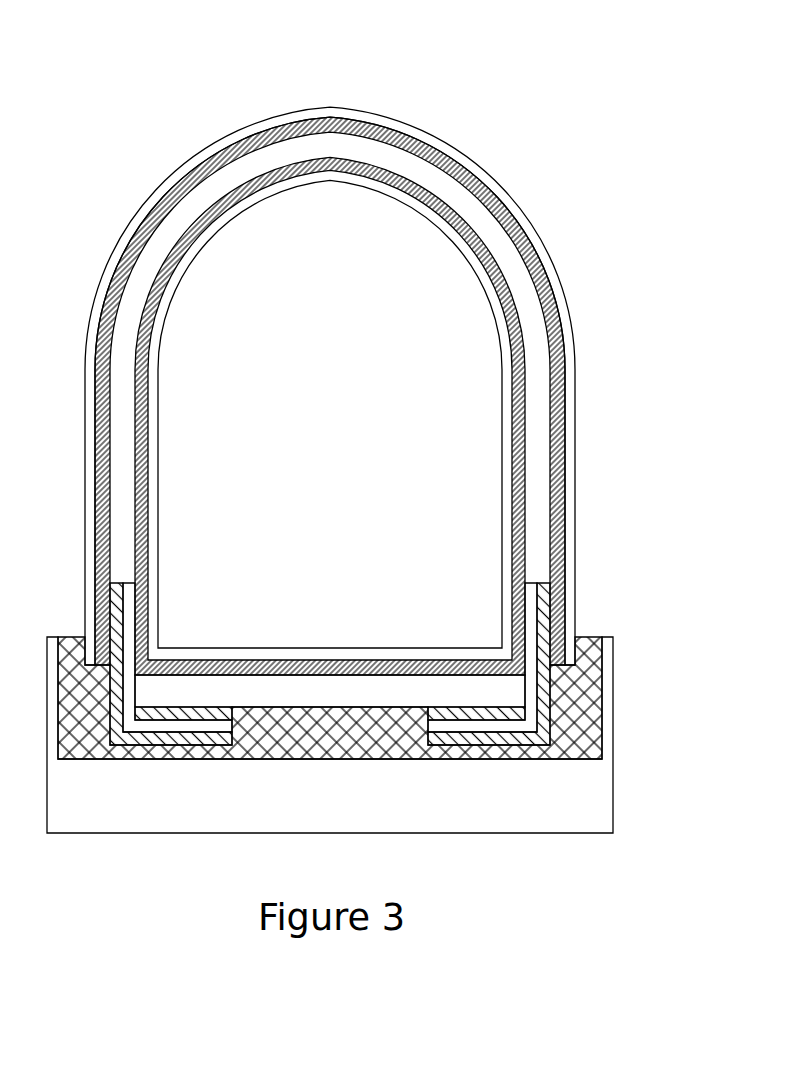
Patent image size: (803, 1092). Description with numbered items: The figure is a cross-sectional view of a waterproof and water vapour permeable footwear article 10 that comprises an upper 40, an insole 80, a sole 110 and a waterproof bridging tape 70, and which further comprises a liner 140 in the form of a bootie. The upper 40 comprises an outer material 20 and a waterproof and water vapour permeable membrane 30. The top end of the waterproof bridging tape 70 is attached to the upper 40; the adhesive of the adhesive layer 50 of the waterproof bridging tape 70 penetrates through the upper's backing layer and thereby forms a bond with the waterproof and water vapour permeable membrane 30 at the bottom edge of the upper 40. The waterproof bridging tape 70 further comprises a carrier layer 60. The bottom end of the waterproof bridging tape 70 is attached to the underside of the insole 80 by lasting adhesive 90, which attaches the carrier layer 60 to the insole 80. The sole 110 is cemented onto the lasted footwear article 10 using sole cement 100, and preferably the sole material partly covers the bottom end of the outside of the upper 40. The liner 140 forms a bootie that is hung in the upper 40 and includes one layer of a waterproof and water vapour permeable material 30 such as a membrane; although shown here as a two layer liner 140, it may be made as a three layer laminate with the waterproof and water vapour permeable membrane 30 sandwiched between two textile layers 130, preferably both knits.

The footwear article 10 is at (572, 75).
The outer material 20 is at (532, 240).
The waterproof and water vapour permeable membrane 30 is at (537, 280).
The upper 40 is at (390, 386).
The adhesive layer 50 is at (543, 625).
The carrier layer 60 is at (532, 590).
The waterproof bridging tape 70 is at (407, 649).
The insole 80 is at (252, 690).
The lasting adhesive 90 is at (185, 715).
The sole cement 100 is at (583, 705).
The sole 110 is at (577, 793).
The textile layers 130 is at (499, 323).
The liner 140 is at (330, 416).